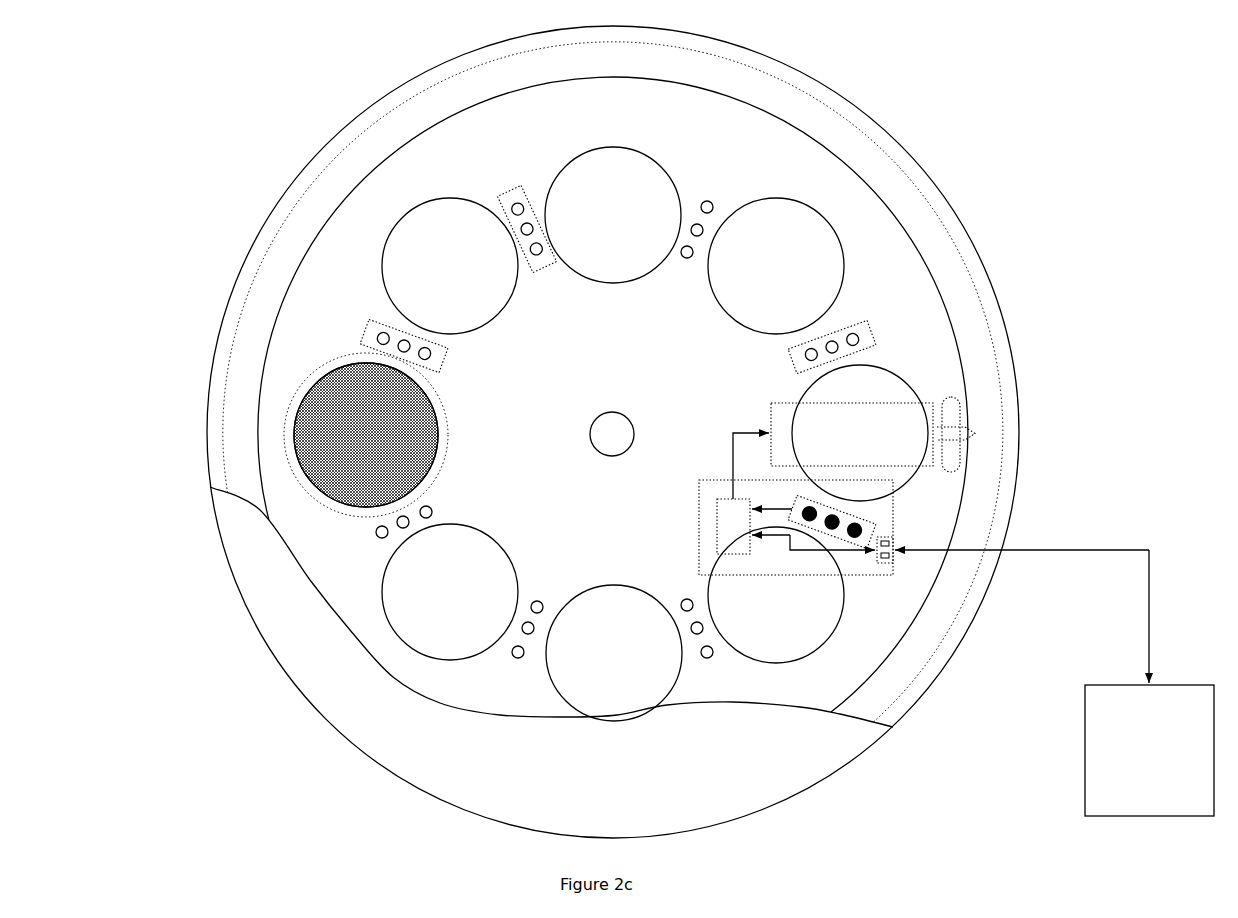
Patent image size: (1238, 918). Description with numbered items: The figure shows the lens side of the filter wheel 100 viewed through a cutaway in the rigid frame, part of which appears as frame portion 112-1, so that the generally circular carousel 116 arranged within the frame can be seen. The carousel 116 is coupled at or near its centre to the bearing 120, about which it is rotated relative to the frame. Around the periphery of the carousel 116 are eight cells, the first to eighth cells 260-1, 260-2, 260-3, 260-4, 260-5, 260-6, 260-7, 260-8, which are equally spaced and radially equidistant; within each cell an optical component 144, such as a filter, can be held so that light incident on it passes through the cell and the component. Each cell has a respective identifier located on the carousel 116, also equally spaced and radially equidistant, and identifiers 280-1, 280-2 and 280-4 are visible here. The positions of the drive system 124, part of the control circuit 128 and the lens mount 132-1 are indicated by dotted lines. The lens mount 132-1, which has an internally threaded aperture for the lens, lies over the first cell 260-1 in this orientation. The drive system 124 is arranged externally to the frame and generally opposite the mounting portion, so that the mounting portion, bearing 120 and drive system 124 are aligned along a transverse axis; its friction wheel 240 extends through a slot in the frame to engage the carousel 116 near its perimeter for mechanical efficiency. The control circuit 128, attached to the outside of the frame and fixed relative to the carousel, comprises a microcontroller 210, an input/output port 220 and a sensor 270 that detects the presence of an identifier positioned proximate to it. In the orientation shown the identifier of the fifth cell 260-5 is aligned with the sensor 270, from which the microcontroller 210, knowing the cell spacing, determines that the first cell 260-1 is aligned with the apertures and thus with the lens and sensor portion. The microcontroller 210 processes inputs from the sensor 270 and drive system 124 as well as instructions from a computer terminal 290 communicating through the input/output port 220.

The filter wheel 100 is at (86, 779).
The substrate 112-1 is at (363, 735).
The carousel 116 is at (858, 192).
The bearing 120 is at (595, 452).
The drive system 124 is at (758, 402).
The control circuit 128 is at (688, 530).
The lens mount 132-1 is at (338, 355).
The optical component 144 is at (312, 485).
The microcontroller 210 is at (733, 499).
The input/output port 220 is at (893, 540).
The friction wheel 240 is at (955, 472).
The first cell 260-1 is at (432, 415).
The second cell 260-2 is at (455, 198).
The third cell 260-3 is at (613, 147).
The fourth cell 260-4 is at (717, 300).
The fifth cell 260-5 is at (893, 367).
The sixth cell 260-6 is at (787, 663).
The seventh cell 260-7 is at (592, 586).
The eighth cell 260-8 is at (455, 662).
The sensor 270 is at (855, 545).
The identifier 280-1 is at (445, 360).
The identifier 280-2 is at (520, 190).
The identifier 280-4 is at (800, 357).
The computer terminal 290 is at (1085, 738).